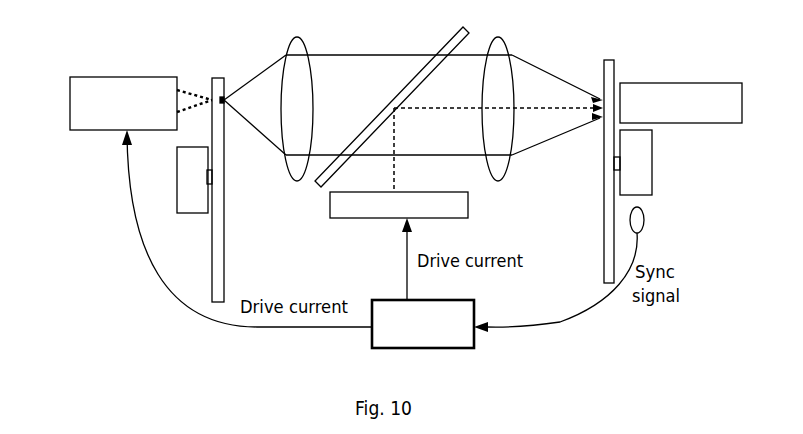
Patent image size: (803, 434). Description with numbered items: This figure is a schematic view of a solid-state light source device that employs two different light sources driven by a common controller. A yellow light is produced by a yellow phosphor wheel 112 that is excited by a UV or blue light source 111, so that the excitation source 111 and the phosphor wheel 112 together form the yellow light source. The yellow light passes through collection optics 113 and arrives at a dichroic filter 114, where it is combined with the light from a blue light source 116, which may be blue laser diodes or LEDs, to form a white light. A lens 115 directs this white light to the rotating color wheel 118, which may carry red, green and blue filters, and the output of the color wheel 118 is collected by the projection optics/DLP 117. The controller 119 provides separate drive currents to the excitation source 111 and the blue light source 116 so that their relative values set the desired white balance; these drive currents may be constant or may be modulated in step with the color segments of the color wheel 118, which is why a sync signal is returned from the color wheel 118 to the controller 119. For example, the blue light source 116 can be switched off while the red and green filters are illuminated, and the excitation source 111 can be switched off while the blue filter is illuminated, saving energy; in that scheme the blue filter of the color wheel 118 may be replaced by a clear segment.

The UV or blue light source 111 is at (69, 95).
The yellow phosphor wheel 112 is at (212, 80).
The collection optics 113 is at (290, 45).
The dichroic filter 114 is at (455, 37).
The lens 115 is at (497, 35).
The blue light source 116 is at (362, 220).
The projection optics/DLP 117 is at (695, 82).
The color wheel 118 is at (600, 223).
The controller 119 is at (370, 343).